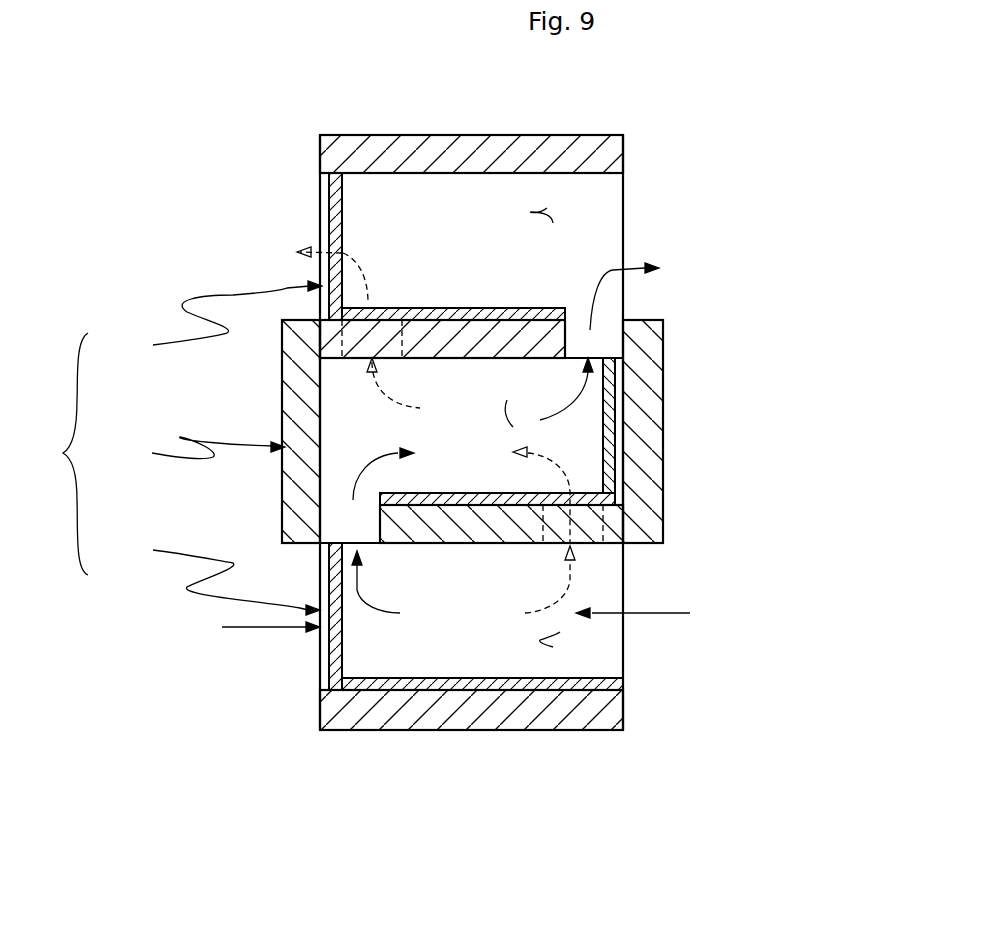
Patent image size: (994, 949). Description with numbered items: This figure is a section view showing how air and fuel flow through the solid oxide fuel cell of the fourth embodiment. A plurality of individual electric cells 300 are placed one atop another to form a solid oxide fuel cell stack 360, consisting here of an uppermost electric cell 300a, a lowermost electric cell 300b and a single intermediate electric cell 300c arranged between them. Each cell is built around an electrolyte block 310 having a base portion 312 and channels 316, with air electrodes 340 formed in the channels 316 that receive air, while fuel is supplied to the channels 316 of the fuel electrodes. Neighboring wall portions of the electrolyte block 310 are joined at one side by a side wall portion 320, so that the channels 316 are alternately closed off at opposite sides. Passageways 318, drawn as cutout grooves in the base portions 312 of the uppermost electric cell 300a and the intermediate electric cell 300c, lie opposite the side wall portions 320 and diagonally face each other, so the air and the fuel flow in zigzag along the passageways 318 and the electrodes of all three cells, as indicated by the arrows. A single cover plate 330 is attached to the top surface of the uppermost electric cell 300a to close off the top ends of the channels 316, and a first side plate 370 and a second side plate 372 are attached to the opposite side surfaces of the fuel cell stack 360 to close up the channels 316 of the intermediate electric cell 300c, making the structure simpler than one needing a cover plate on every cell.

The solid oxide fuel cell stack 360 is at (235, 117).
The electrolyte block 310 is at (635, 193).
The base portion 312 is at (440, 340).
The channels 316 is at (547, 208).
The passageways 318 is at (565, 343).
The side wall portion 320 is at (328, 203).
The cover plate 330 is at (588, 152).
The air electrodes 340 is at (484, 313).
The first side plate 370 is at (650, 375).
The second side plate 372 is at (303, 417).
The individual electric cells 300 is at (51, 454).
The uppermost electric cell 300a is at (147, 362).
The lowermost electric cell 300b is at (147, 562).
The intermediate electric cell 300c is at (145, 463).